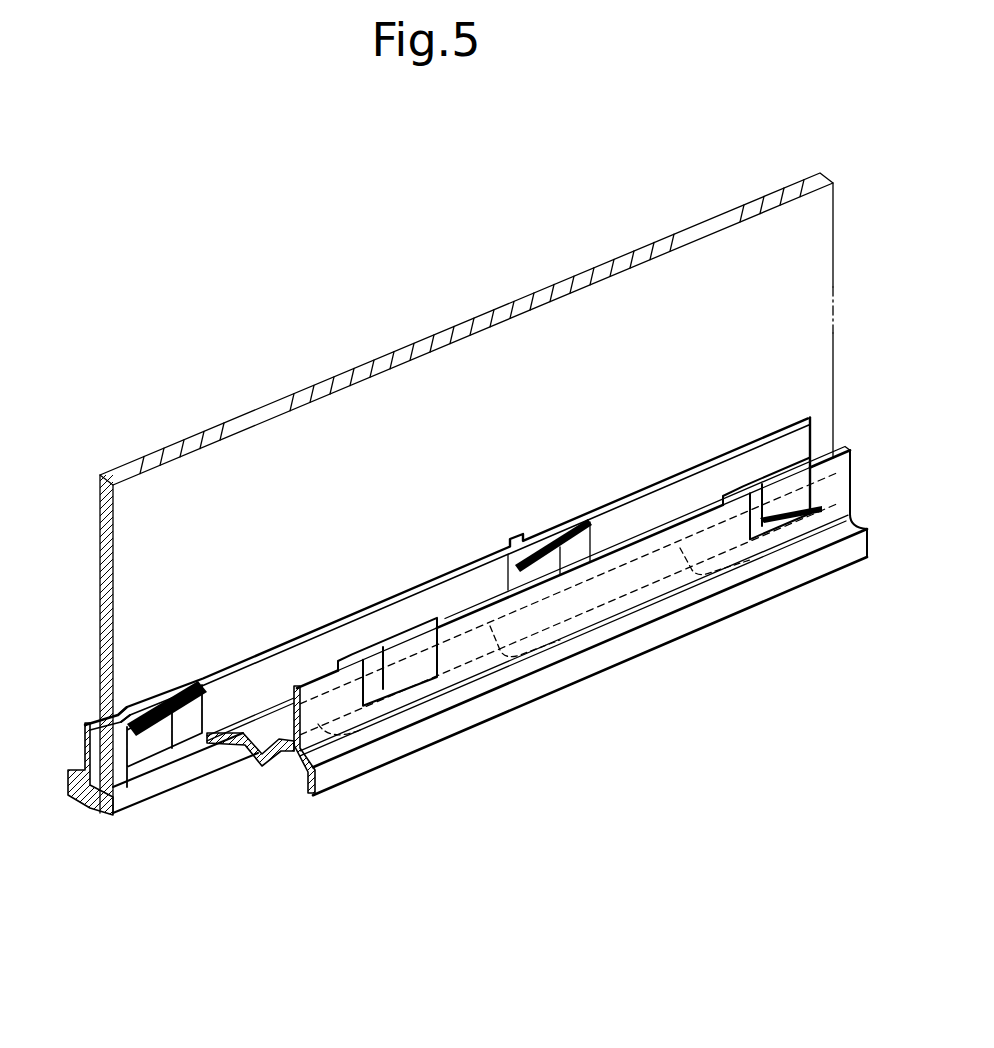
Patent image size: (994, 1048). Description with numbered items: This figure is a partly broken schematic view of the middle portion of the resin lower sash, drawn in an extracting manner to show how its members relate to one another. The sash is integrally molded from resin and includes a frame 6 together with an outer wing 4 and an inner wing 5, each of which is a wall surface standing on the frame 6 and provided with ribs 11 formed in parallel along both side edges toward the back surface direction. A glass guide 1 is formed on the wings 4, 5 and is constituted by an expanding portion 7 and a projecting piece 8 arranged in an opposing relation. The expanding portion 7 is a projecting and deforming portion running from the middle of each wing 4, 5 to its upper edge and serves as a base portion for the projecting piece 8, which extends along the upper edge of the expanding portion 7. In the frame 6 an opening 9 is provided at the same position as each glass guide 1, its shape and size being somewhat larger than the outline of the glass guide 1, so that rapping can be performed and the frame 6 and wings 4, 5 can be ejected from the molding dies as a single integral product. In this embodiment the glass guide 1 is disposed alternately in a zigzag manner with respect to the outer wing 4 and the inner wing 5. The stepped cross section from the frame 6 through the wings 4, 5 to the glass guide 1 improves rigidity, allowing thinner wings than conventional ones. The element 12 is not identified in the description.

The glass guide 1 is at (563, 522).
The outer wing 4 is at (823, 457).
The inner wing 5 is at (757, 437).
The frame 6 is at (483, 687).
The expanding portion 7 is at (143, 705).
The projecting piece 8 is at (138, 717).
The opening 9 is at (560, 627).
The rib 11 is at (75, 807).
The plate 12 is at (438, 494).